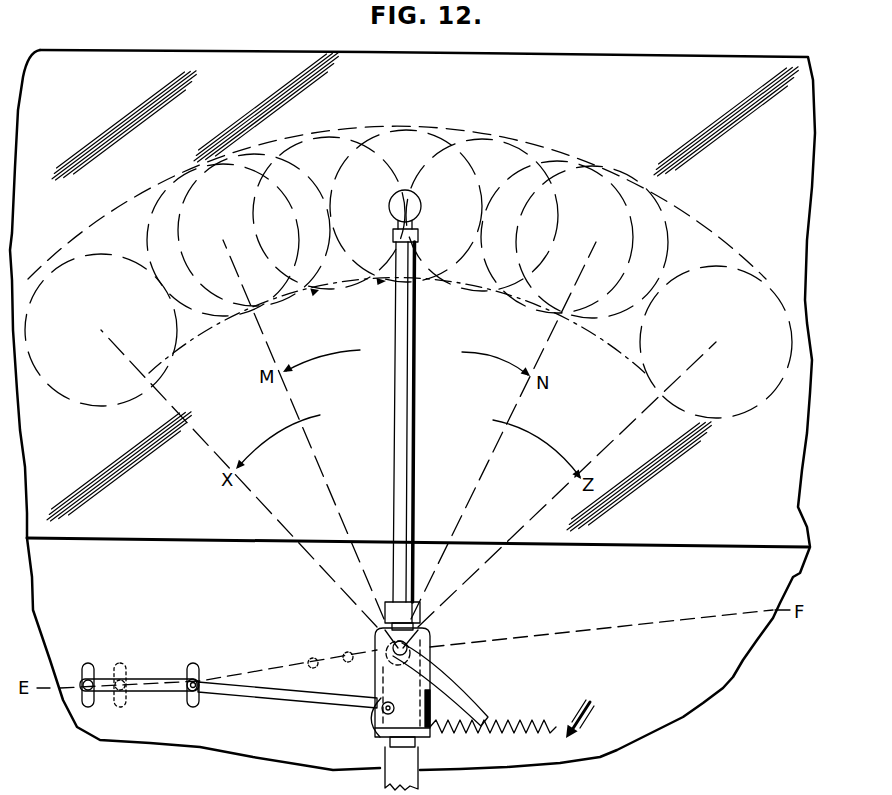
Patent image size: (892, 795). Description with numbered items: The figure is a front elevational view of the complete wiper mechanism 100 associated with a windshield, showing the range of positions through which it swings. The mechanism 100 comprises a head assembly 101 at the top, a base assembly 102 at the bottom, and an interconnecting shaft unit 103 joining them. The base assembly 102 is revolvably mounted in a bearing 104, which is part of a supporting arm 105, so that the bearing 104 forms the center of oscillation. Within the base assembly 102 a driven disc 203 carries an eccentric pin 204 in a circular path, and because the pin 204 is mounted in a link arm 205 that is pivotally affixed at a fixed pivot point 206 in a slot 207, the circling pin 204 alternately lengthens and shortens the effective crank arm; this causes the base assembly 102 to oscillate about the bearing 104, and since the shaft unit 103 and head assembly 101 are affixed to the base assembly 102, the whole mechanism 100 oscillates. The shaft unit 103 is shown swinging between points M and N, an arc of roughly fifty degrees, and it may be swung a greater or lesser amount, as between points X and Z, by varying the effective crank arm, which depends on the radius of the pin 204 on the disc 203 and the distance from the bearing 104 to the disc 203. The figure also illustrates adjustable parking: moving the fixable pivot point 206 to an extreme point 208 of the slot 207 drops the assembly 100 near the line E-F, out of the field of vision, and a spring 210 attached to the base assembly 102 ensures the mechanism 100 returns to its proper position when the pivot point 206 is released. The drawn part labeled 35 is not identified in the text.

The spray discharge arm 35 is at (460, 694).
The mechanism 100 is at (481, 587).
The head assembly 101 is at (412, 192).
The base assembly 102 is at (430, 648).
The interconnecting shaft unit 103 is at (396, 463).
The bearing 104 is at (377, 648).
The supporting arm 105 is at (415, 765).
The disc 203 is at (377, 746).
The pin 204 is at (375, 716).
The link arm 205 is at (305, 700).
The pivot point 206 is at (191, 697).
The slot 207 is at (170, 652).
The extreme point 208 is at (98, 652).
The spring 210 is at (513, 733).